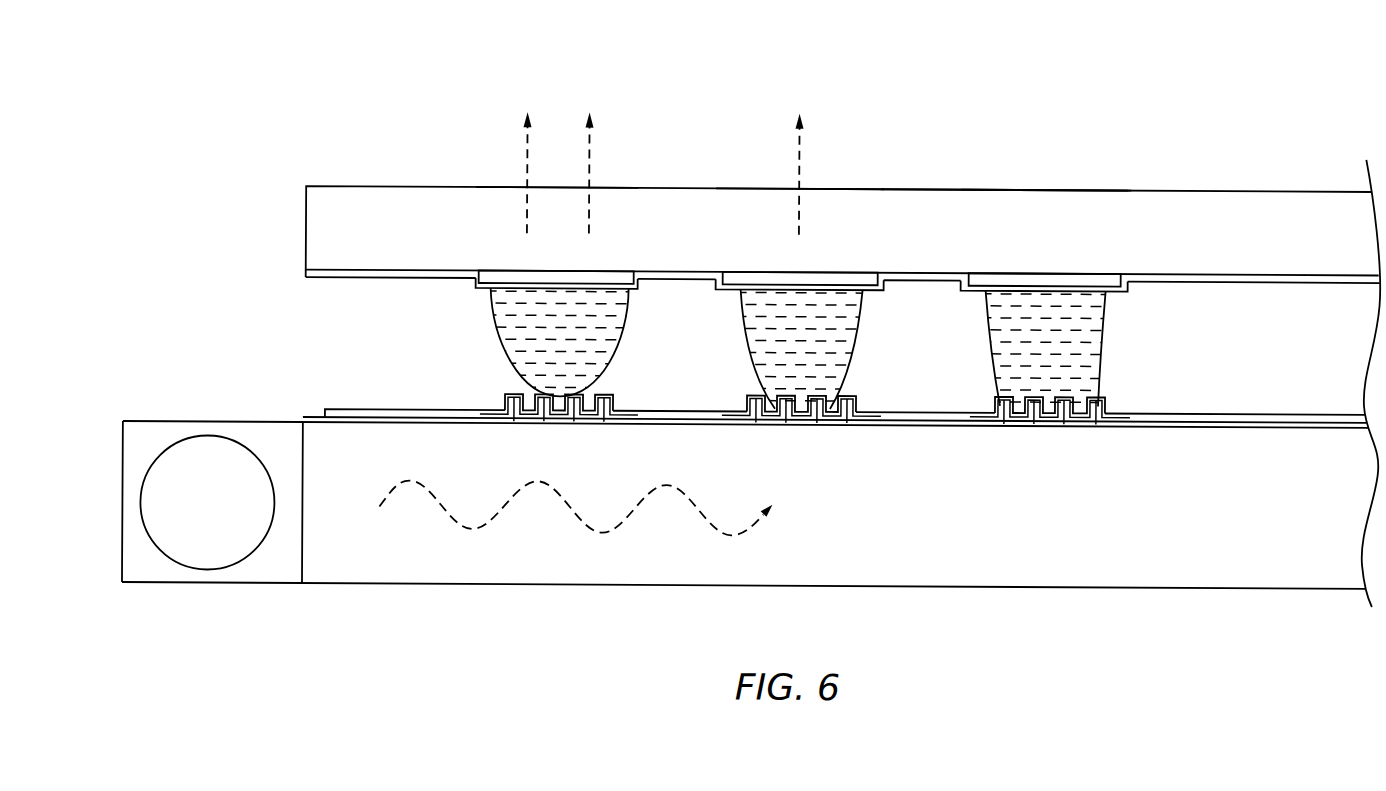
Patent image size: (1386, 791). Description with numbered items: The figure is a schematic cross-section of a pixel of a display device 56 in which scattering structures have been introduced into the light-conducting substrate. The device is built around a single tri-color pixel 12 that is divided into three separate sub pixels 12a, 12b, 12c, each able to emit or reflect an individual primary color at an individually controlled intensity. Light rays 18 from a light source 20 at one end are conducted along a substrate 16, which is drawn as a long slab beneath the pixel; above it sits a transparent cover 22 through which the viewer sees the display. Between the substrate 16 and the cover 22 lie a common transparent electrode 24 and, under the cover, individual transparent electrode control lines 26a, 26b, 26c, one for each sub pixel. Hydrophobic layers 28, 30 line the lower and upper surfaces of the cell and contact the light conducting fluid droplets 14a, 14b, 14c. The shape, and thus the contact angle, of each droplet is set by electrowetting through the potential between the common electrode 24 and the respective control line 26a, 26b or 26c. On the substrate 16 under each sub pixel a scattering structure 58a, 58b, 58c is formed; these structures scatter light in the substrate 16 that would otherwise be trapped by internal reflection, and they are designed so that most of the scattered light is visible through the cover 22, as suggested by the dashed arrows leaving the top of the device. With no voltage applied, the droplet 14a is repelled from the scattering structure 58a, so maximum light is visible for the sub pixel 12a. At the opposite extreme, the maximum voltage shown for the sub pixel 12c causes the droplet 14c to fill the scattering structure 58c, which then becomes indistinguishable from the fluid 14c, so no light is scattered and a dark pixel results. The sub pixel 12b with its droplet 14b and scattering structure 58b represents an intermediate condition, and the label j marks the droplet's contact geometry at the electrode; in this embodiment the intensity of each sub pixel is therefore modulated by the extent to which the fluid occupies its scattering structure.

The tri-color pixel 12 is at (1005, 116).
The sub pixel 12a is at (623, 166).
The sub pixel 12b is at (868, 164).
The sub pixel 12c is at (1103, 163).
The light conducting fluid droplet 14a is at (520, 327).
The light conducting fluid droplet 14b is at (828, 314).
The light conducting fluid droplet 14c is at (1068, 324).
The substrate 16 is at (1277, 562).
The light rays 18 is at (733, 545).
The light source 20 is at (272, 571).
The cover 22 is at (1273, 208).
The common transparent electrode 24 is at (1287, 419).
The transparent electrode control line 26a is at (513, 273).
The transparent electrode control line 26b is at (760, 272).
The transparent electrode control line 26c is at (1007, 270).
The hydrophobic layer 28 is at (1268, 410).
The hydrophobic layer 30 is at (1285, 271).
The display device 56 is at (768, 81).
The scattering structure 58a is at (489, 384).
The scattering structure 58b is at (861, 376).
The scattering structure 58c is at (1118, 377).
The current direction j is at (735, 352).